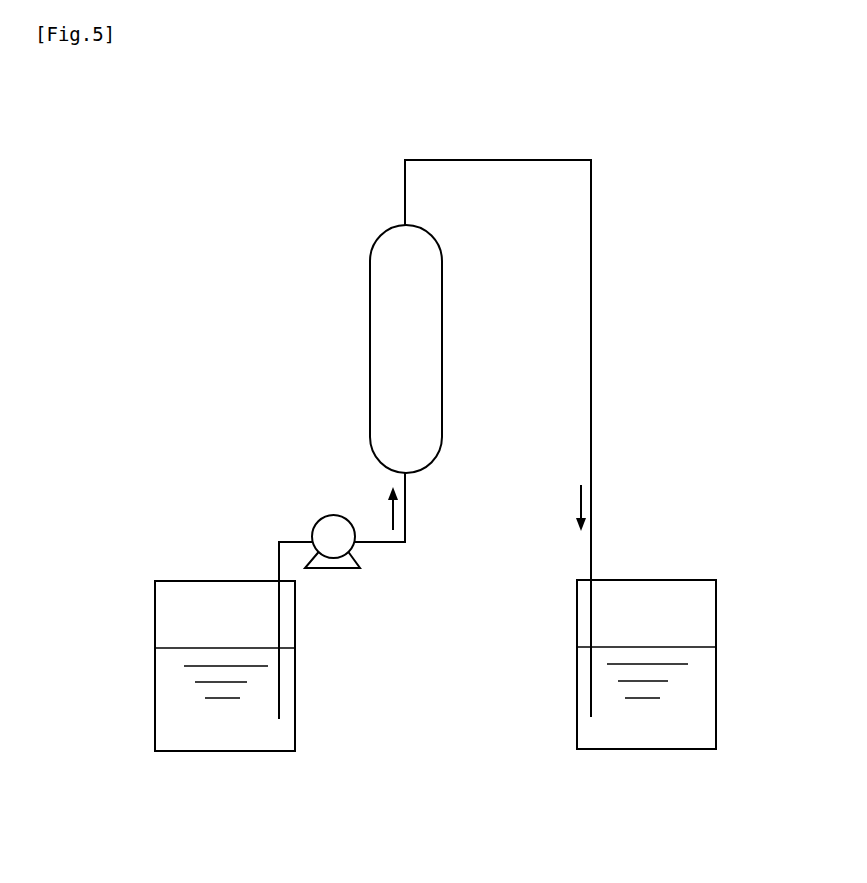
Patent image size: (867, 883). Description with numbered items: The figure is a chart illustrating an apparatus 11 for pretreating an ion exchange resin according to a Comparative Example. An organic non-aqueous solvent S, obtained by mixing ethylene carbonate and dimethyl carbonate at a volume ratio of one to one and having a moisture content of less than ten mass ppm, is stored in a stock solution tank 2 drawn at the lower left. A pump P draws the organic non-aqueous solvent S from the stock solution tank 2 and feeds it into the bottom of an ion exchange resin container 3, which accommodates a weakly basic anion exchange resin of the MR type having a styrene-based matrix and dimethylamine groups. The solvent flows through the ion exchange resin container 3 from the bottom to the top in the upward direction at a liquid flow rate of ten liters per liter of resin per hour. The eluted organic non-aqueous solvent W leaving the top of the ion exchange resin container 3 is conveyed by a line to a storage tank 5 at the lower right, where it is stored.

The apparatus for pretreating an ion exchange resin 11 is at (712, 124).
The ion exchange resin container 3 is at (406, 349).
The pump P is at (322, 518).
The stock solution tank 2 is at (155, 683).
The storage tank 5 is at (716, 672).
The organic non-aqueous solvent S is at (231, 737).
The eluted organic non-aqueous solvent W is at (633, 735).